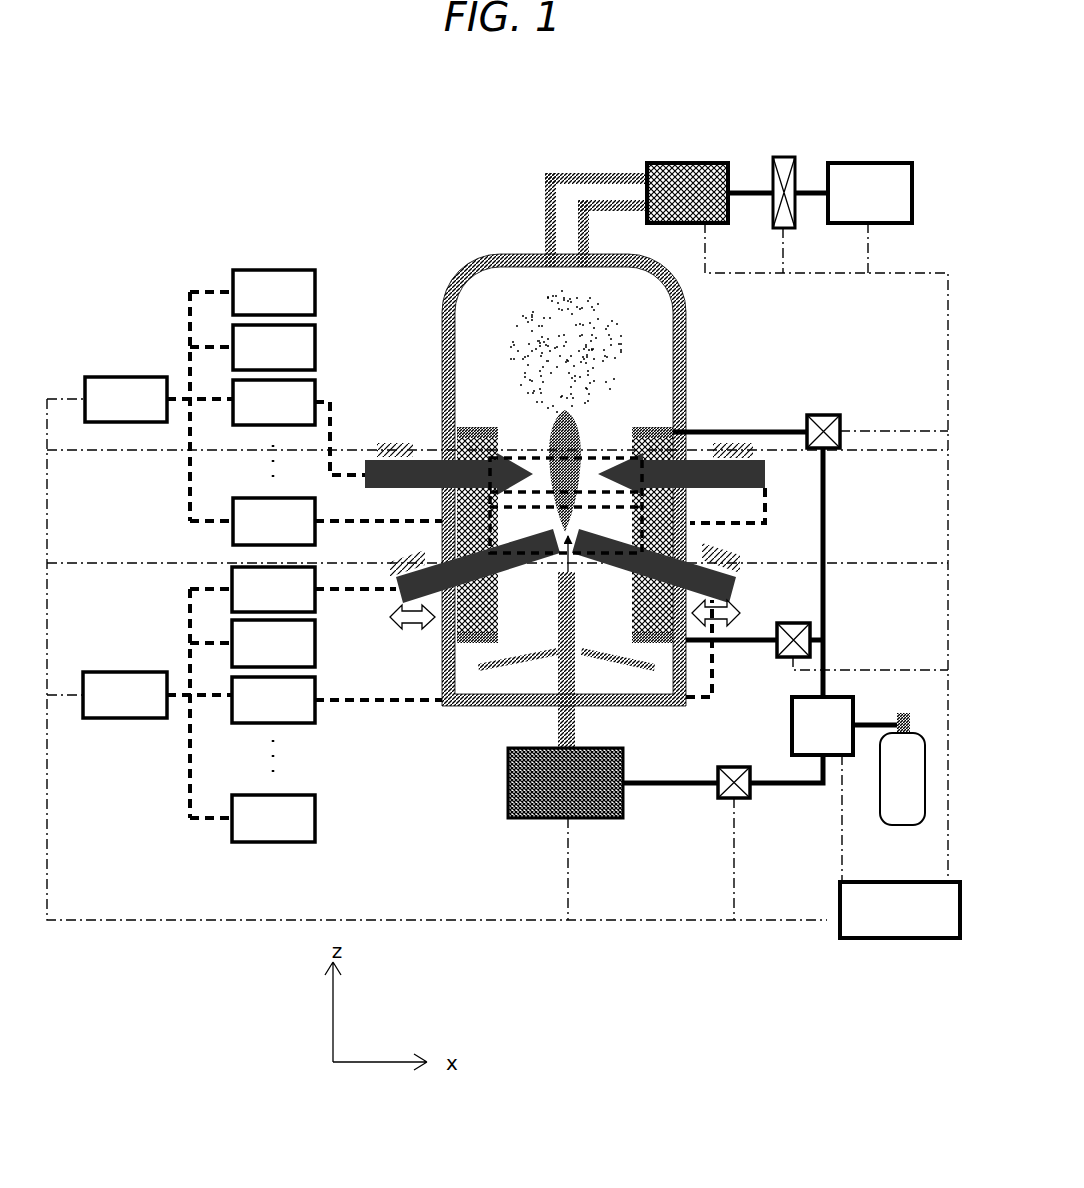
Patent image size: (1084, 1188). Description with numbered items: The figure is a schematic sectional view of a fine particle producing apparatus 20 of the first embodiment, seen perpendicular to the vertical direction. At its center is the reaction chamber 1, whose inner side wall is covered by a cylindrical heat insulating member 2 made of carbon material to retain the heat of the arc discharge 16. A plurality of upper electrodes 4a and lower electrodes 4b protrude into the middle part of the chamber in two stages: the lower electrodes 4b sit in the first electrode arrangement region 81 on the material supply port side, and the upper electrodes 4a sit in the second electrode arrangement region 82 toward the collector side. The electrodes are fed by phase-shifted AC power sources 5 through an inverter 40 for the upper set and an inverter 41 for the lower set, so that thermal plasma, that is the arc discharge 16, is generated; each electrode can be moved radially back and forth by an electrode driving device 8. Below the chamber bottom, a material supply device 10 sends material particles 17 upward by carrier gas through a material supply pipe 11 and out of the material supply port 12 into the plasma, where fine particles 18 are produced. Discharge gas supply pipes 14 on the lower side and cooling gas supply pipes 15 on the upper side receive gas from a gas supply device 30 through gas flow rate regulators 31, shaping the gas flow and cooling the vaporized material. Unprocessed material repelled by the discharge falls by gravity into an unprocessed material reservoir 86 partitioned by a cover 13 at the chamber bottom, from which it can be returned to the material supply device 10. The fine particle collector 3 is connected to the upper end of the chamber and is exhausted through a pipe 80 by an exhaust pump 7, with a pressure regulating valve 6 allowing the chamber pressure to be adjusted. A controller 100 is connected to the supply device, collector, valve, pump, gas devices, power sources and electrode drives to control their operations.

The reaction chamber 1 is at (470, 250).
The heat insulating member 2 is at (460, 620).
The fine particle collector 3 is at (660, 180).
The upper electrodes 4a is at (766, 476).
The lower electrodes 4b is at (728, 590).
The AC power sources 5 is at (297, 282).
The pressure regulating valve 6 is at (788, 160).
The exhaust pump 7 is at (860, 178).
The electrode driving device 8 is at (737, 447).
The material supply device 10 is at (525, 806).
The material supply pipe 11 is at (563, 712).
The material supply port 12 is at (627, 637).
The cover 13 is at (600, 660).
The discharge gas supply pipe 14 is at (706, 644).
The cooling gas supply pipe 15 is at (675, 410).
The arc discharge 16 is at (627, 432).
The material particle 17 is at (547, 517).
The fine particle 18 is at (578, 314).
The fine particle producing apparatus 20 is at (323, 91).
The gas supply device 30 is at (858, 761).
The gas flow rate regulator 31 is at (840, 446).
The inverter 40 is at (159, 399).
The inverter 41 is at (158, 695).
The pipe 80 is at (745, 193).
The first electrode arrangement region 81 is at (574, 552).
The second electrode arrangement region 82 is at (566, 493).
The unprocessed material reservoir 86 is at (495, 678).
The controller 100 is at (903, 940).